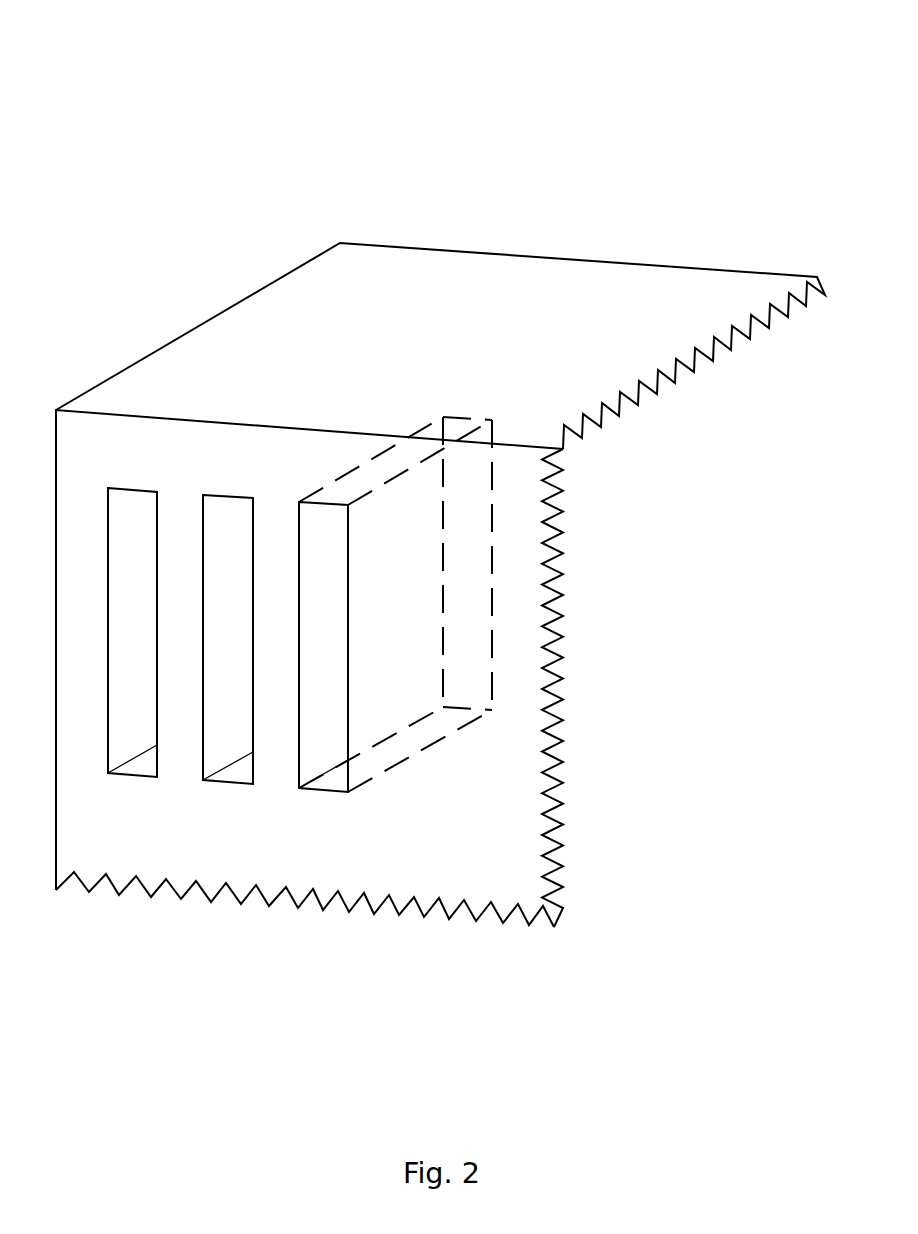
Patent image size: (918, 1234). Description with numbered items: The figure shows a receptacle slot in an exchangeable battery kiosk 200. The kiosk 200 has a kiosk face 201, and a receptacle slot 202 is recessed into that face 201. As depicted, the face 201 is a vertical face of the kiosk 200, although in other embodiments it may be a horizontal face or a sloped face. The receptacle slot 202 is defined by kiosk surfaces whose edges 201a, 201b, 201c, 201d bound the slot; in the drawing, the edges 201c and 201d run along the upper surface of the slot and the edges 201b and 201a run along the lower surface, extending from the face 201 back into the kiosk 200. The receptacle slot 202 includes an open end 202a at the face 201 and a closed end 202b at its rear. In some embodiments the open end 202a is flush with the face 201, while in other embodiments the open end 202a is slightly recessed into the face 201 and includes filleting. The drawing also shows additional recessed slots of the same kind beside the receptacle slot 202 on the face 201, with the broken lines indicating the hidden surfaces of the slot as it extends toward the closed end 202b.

The kiosk 200 is at (119, 56).
The kiosk face 201 is at (145, 832).
The edge 201a is at (447, 740).
The edge 201b is at (442, 706).
The edge 201c is at (358, 497).
The edge 201d is at (425, 429).
The receptacle slot 202 is at (138, 490).
The open end 202a is at (294, 814).
The closed end 202b is at (512, 406).